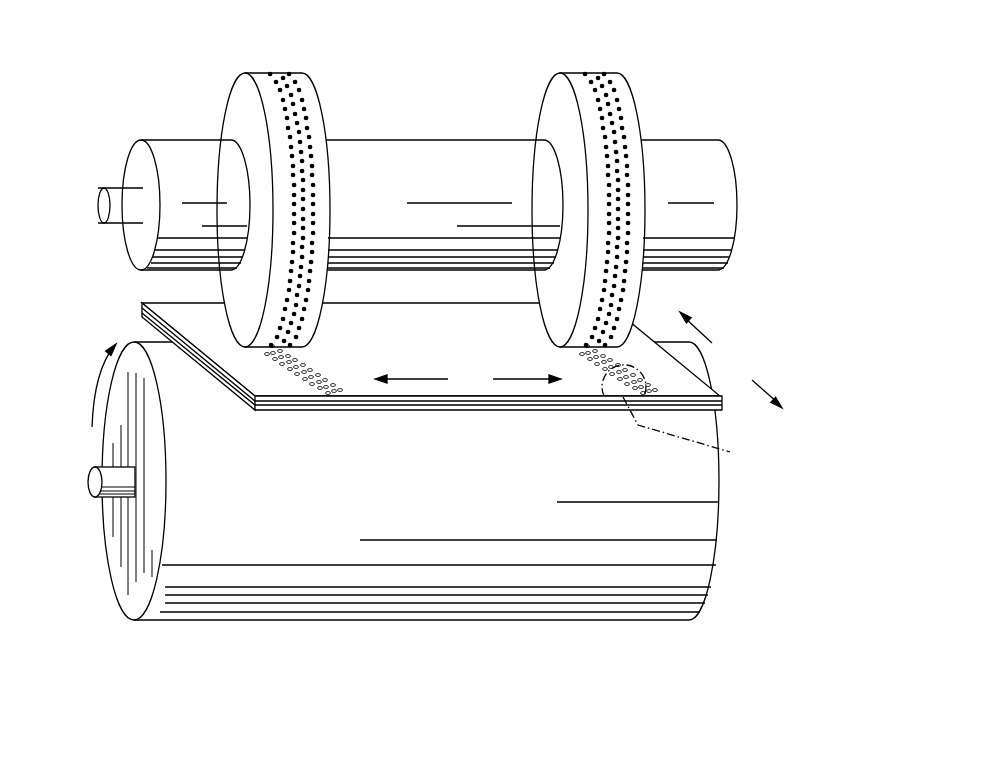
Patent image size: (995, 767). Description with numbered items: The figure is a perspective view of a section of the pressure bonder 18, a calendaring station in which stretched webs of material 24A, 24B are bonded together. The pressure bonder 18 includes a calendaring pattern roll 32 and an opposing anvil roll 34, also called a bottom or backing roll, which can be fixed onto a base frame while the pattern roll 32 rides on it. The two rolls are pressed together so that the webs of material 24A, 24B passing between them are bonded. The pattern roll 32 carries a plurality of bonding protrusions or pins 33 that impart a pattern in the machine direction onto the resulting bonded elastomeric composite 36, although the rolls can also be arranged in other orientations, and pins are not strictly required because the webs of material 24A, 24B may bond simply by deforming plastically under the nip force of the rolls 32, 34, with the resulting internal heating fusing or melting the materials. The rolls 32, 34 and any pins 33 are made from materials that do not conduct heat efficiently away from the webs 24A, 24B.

The pressure bonder 18 is at (785, 132).
The pattern roll 32 is at (417, 205).
The bonding protrusions or pins 33 is at (595, 73).
The anvil roll 34 is at (403, 481).
The web of material 24A is at (153, 320).
The web of material 24B is at (147, 305).
The bonded elastomeric composite 36 is at (325, 392).